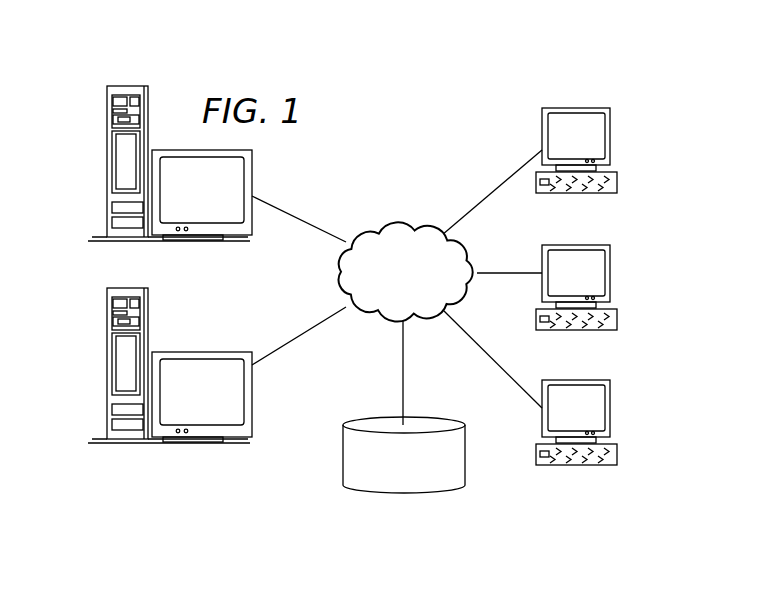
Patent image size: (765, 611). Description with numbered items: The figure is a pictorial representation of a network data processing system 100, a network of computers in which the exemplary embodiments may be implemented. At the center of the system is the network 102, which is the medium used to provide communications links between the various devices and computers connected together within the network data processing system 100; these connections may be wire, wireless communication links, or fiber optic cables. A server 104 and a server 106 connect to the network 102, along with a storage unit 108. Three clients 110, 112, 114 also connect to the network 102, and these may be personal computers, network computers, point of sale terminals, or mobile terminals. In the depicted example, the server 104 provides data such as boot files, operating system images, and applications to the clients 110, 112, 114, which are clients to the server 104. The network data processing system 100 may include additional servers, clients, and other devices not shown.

The network data processing system 100 is at (457, 112).
The network 102 is at (377, 227).
The server 104 is at (107, 164).
The server 106 is at (107, 366).
The storage unit 108 is at (388, 495).
The client 110 is at (611, 139).
The client 112 is at (611, 276).
The client 114 is at (611, 410).